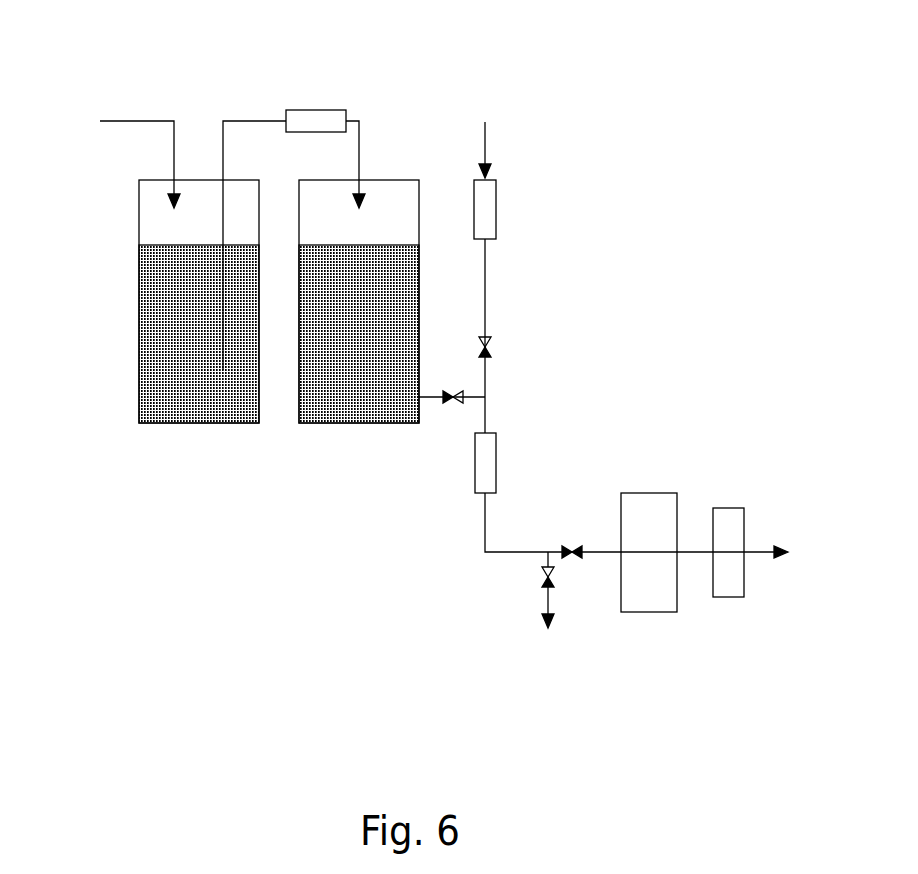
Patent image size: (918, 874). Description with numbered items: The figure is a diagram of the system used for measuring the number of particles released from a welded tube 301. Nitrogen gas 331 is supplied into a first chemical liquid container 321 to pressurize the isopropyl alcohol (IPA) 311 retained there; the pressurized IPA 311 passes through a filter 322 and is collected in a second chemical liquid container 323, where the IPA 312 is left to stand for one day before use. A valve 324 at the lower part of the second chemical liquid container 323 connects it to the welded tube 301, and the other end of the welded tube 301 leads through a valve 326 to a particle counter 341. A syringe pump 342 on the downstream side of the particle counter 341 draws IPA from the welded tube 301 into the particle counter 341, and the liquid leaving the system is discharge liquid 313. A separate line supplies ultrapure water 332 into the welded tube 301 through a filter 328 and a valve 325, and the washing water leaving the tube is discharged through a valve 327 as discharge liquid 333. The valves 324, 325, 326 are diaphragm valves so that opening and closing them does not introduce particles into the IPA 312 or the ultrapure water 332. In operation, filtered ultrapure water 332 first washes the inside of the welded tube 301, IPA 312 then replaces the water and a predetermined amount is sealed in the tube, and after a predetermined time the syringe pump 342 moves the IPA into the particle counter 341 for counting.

The welded tube 301 is at (483, 477).
The isopropyl alcohol (IPA) 311 is at (153, 332).
The isopropyl alcohol (IPA) 312 is at (318, 400).
The discharge liquid 313 is at (765, 555).
The first chemical liquid container 321 is at (200, 425).
The filter 322 is at (318, 110).
The second chemical liquid container 323 is at (343, 425).
The valve 324 is at (443, 393).
The valve 325 is at (491, 347).
The valve 326 is at (570, 548).
The valve 327 is at (553, 572).
The filter 328 is at (485, 210).
The nitrogen gas 331 is at (140, 118).
The ultrapure water 332 is at (485, 137).
The discharge liquid 333 is at (545, 607).
The particle counter 341 is at (648, 515).
The syringe pump 342 is at (727, 527).